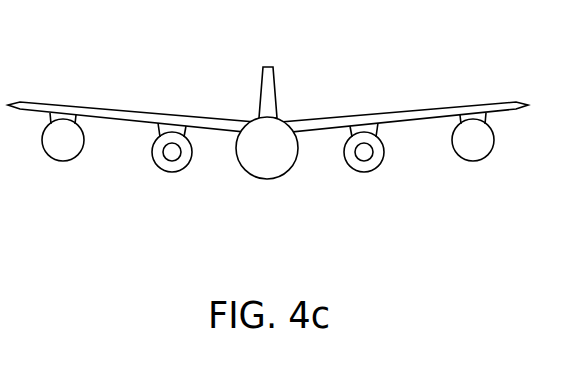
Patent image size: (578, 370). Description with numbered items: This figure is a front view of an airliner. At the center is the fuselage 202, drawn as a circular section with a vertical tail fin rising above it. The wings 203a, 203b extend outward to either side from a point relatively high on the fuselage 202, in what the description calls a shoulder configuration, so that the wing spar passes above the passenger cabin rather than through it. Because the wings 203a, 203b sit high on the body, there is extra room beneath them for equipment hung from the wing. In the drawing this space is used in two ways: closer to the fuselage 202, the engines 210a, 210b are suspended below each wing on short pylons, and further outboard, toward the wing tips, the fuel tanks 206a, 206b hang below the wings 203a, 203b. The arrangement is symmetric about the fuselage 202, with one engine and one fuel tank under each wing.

The fuselage 202 is at (265, 179).
The wing 203a is at (401, 113).
The wing 203b is at (129, 113).
The fuel tank 206a is at (473, 161).
The fuel tank 206b is at (63, 161).
The engine 210a is at (366, 172).
The engine 210b is at (168, 172).